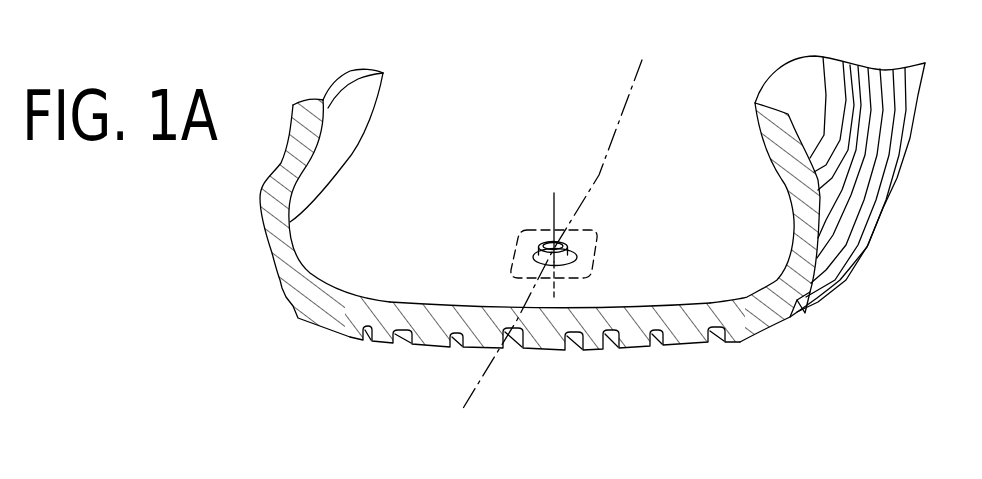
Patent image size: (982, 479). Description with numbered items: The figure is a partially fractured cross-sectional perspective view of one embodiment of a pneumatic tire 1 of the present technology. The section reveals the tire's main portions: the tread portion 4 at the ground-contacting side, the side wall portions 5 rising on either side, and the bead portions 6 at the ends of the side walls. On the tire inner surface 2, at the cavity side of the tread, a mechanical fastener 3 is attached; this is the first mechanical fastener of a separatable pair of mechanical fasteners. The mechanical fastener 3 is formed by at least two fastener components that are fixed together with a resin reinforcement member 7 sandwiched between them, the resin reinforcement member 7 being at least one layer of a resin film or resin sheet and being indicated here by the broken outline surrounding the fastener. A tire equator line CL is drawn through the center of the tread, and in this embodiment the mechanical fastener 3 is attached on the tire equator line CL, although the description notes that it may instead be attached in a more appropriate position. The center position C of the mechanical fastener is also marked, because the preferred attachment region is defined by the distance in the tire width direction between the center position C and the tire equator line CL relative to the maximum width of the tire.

The pneumatic tire 1 is at (600, 226).
The tire inner surface 2 is at (417, 150).
The mechanical fastener 3 is at (540, 253).
The tread portion 4 is at (620, 348).
The side wall portion 5 is at (806, 236).
The bead portion 6 is at (782, 138).
The resin reinforcement member 7 is at (592, 231).
The center position of the mechanical fastener C is at (554, 252).
The tire equator line CL is at (633, 97).